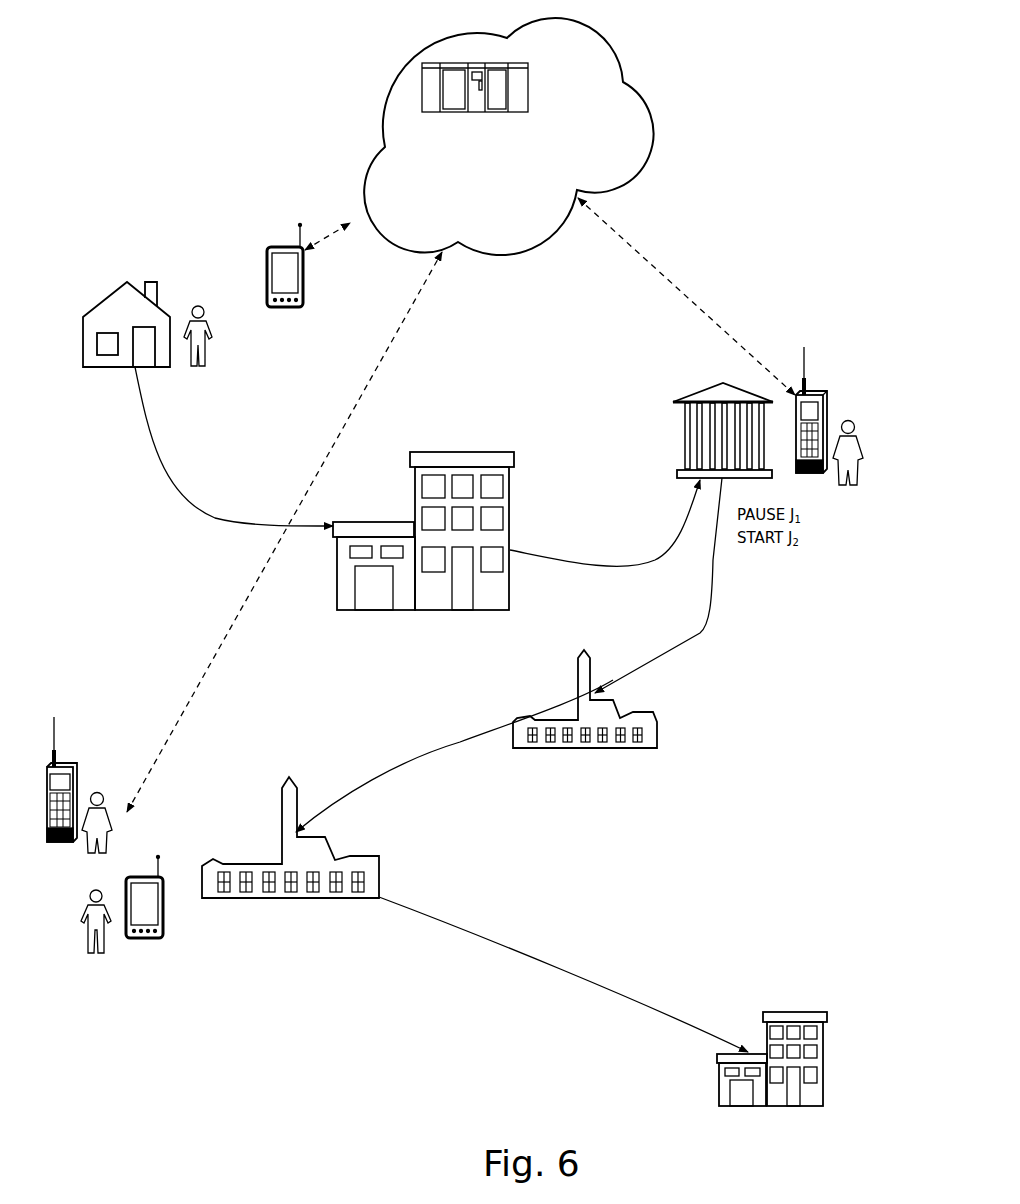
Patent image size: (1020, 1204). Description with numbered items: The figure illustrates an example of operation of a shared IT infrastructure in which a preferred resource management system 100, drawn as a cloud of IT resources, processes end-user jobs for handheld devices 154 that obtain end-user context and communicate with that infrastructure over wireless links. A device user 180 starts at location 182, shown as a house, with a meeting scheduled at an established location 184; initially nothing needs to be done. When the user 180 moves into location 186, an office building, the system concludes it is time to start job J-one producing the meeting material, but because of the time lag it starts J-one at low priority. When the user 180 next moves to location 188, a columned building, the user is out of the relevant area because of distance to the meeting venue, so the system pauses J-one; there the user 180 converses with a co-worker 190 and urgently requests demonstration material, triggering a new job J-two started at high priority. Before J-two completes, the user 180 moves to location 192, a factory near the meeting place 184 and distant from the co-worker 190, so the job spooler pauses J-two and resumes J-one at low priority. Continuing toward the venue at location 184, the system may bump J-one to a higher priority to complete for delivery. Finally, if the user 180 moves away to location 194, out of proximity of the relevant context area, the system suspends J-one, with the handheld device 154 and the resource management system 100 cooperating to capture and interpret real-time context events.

The resource management system 100 is at (422, 98).
The handheld device 154 is at (267, 278).
The device user 180 is at (212, 340).
The location 182 is at (111, 309).
The established location 184 is at (278, 836).
The location L1 186 is at (410, 522).
The location L2 188 is at (680, 402).
The co-worker 190 is at (860, 438).
The location L3 192 is at (577, 700).
The location L5 194 is at (828, 1018).